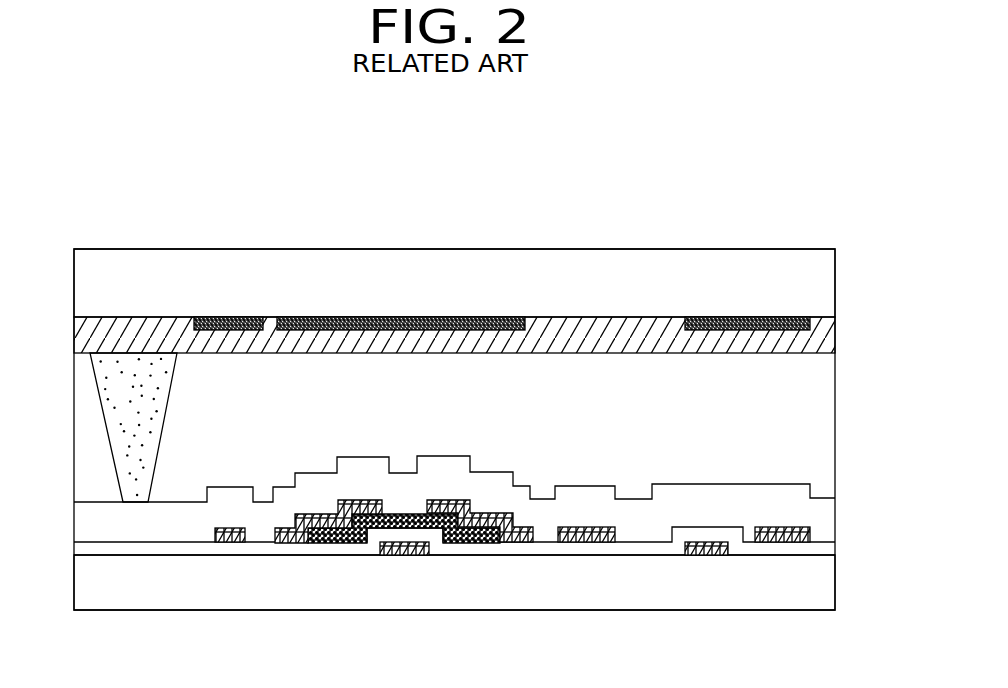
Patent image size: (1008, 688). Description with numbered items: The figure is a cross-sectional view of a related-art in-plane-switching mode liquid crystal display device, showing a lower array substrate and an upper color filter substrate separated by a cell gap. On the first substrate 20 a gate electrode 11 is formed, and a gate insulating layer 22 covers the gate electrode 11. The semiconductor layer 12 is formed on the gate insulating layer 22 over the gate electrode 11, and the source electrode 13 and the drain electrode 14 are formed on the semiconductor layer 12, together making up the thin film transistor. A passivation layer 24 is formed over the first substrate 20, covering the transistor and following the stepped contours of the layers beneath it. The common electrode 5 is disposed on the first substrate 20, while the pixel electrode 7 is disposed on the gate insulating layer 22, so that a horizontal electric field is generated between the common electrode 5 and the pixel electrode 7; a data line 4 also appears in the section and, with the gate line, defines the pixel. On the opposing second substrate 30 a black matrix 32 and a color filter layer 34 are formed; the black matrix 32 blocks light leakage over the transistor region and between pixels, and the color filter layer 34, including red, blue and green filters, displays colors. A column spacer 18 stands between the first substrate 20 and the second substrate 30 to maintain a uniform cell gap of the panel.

The second substrate 30 is at (818, 285).
The color filter layer 34 is at (590, 330).
The black matrix 32 is at (329, 318).
The column spacer 18 is at (126, 365).
The passivation layer 24 is at (820, 518).
The gate insulating layer 22 is at (820, 545).
The first substrate 20 is at (820, 580).
The gate electrode 11 is at (410, 557).
The semiconductor layer 12 is at (350, 543).
The source electrode 13 is at (297, 543).
The drain electrode 14 is at (521, 543).
The pixel electrode 7 is at (578, 543).
The common electrode 5 is at (705, 555).
The data line 4 is at (232, 543).